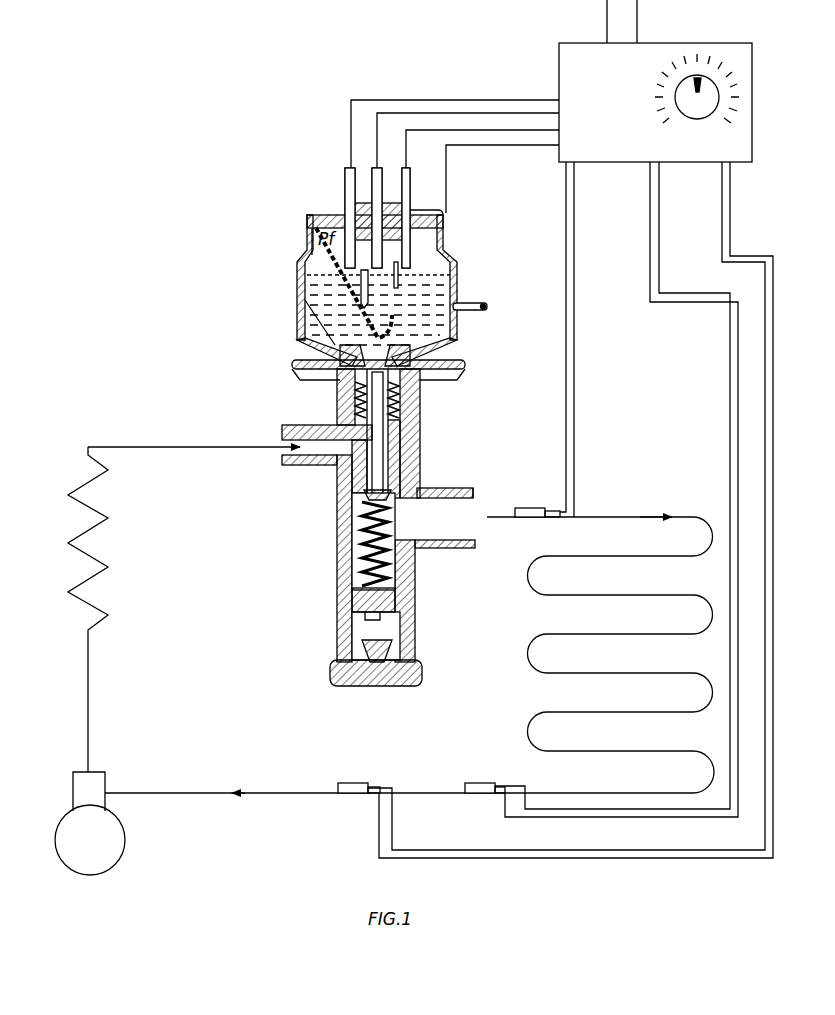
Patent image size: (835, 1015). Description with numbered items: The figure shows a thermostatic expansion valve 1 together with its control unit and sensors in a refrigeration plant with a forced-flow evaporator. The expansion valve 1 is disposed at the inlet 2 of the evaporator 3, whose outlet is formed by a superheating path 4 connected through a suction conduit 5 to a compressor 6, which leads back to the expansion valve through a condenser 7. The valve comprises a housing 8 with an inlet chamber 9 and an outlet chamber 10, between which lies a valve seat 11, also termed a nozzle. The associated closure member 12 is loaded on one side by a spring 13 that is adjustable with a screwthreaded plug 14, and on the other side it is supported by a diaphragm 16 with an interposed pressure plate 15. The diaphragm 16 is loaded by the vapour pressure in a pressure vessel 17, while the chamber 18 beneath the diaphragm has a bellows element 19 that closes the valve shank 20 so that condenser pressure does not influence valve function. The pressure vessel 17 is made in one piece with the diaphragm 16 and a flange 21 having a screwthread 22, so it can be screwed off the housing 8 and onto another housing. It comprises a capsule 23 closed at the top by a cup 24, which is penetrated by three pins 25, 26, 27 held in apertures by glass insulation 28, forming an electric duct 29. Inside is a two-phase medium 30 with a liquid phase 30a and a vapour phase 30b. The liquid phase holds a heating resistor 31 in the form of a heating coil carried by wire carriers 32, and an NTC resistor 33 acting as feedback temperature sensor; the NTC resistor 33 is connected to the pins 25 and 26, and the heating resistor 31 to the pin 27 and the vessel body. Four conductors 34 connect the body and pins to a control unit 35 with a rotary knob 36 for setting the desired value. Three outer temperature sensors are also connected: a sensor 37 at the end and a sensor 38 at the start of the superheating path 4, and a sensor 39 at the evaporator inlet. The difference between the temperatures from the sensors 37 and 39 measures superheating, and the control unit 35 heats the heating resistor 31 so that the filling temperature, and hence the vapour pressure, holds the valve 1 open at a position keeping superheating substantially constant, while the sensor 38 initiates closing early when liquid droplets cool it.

The thermostatic expansion valve 1 is at (335, 619).
The inlet 2 is at (487, 520).
The evaporator 3 is at (555, 575).
The superheating path 4 is at (430, 793).
The suction conduit 5 is at (192, 793).
The compressor 6 is at (118, 832).
The condenser 7 is at (92, 553).
The housing 8 is at (342, 525).
The inlet chamber 9 is at (305, 465).
The outlet chamber 10 is at (470, 512).
The valve seat 11 is at (388, 496).
The closure member 12 is at (368, 501).
The spring 13 is at (388, 572).
The screwthreaded plug 14 is at (350, 572).
The pressure plate 15 is at (412, 381).
The diaphragm 16 is at (332, 354).
The pressure vessel 17 is at (470, 298).
The chamber 18 is at (330, 385).
The bellows element 19 is at (392, 396).
The valve shank 20 is at (378, 428).
The flange 21 is at (300, 378).
The screwthread 22 is at (345, 394).
The capsule 23 is at (300, 318).
The cup 24 is at (312, 222).
The pin 25 is at (347, 166).
The pin 26 is at (372, 187).
The pin 27 is at (408, 170).
The glass insulation 28 is at (345, 212).
The electric duct 29 is at (352, 92).
The two-phase medium 30 is at (420, 282).
The liquid phase 30a is at (420, 318).
The vapour phase 30b is at (440, 238).
The heating resistor 31 is at (340, 300).
The wire carriers 32 is at (300, 266).
The NTC resistor 33 is at (400, 298).
The conductors 34 is at (519, 99).
The control unit 35 is at (579, 50).
The rotary knob 36 is at (699, 78).
The sensor 37 is at (352, 782).
The sensor 38 is at (485, 782).
The sensor 39 is at (530, 505).